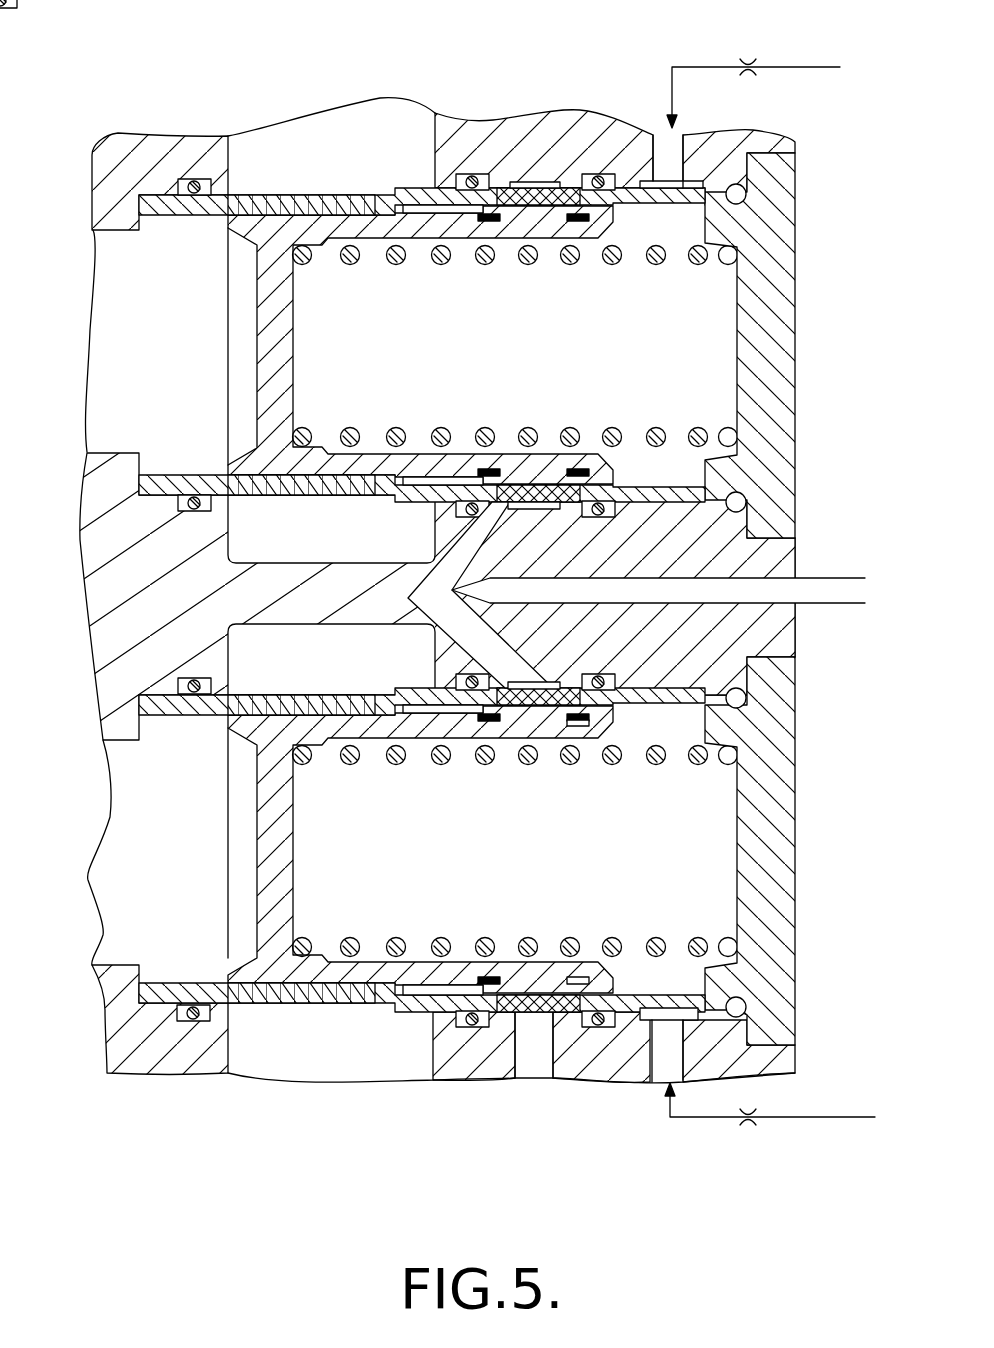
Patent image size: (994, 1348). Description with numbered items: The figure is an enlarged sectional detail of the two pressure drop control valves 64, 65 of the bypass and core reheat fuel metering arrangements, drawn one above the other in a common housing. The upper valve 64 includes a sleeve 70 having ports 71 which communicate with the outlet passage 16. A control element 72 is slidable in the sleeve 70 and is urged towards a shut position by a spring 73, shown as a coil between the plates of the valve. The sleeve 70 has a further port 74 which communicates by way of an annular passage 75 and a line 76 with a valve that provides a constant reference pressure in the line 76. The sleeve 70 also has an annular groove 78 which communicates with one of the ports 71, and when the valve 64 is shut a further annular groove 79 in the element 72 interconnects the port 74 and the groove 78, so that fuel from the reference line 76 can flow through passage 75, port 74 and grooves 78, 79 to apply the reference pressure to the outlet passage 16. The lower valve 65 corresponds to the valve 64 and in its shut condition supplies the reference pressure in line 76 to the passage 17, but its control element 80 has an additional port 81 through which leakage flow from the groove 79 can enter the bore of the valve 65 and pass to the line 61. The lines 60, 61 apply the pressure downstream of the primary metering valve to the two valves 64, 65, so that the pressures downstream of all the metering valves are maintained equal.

The outlet passage 16 is at (312, 128).
The outlet passage 17 is at (378, 1053).
The line 60 is at (797, 65).
The line 61 is at (828, 1120).
The pressure drop control valve 64 is at (806, 334).
The pressure drop control valve 65 is at (806, 855).
The sleeve 70 is at (170, 485).
The ports 71 is at (314, 197).
The control element 72 is at (278, 357).
The spring 73 is at (693, 262).
The further port 74 is at (535, 218).
The annular passage 75 is at (538, 500).
The line 76 is at (845, 592).
The annular groove 78 is at (433, 210).
The further annular groove 79 is at (490, 220).
The control element 80 is at (432, 730).
The additional port 81 is at (580, 720).